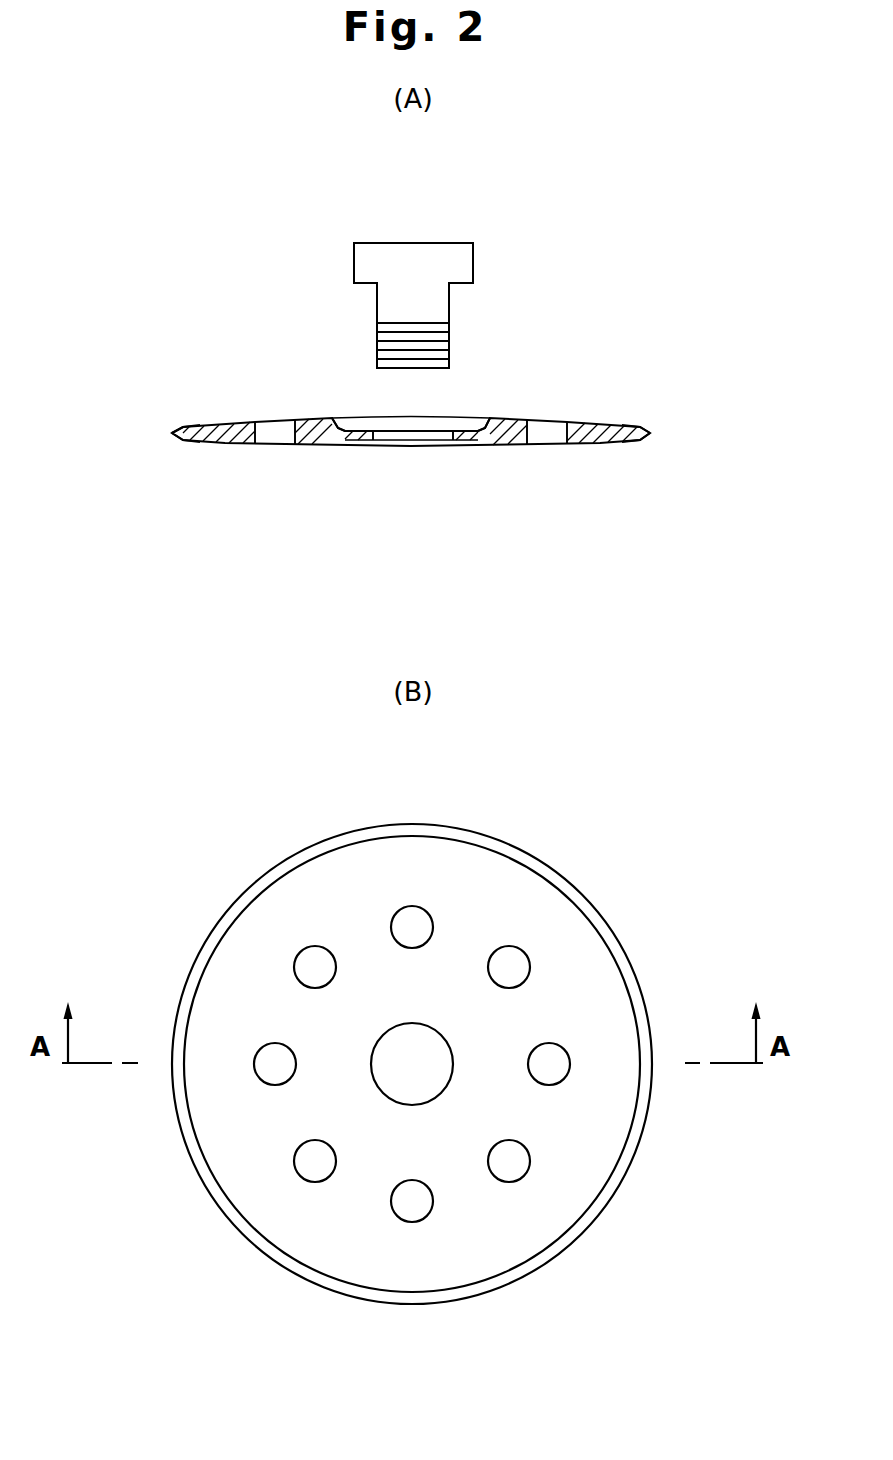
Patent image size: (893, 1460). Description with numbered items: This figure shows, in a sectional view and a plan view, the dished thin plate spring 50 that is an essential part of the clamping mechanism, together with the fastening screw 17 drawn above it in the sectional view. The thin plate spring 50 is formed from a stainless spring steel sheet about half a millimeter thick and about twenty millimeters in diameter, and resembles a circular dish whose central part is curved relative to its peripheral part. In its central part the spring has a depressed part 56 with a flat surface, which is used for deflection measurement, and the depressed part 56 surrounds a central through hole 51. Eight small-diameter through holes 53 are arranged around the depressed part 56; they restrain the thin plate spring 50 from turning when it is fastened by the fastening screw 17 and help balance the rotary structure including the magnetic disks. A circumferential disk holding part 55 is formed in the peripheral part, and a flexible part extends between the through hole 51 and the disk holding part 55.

The fastening screw 17 is at (367, 243).
The thin plate spring 50 is at (583, 384).
The through hole 51 is at (425, 447).
The through holes 53 is at (280, 447).
The disk holding part 55 is at (193, 447).
The depressed part 56 is at (468, 421).